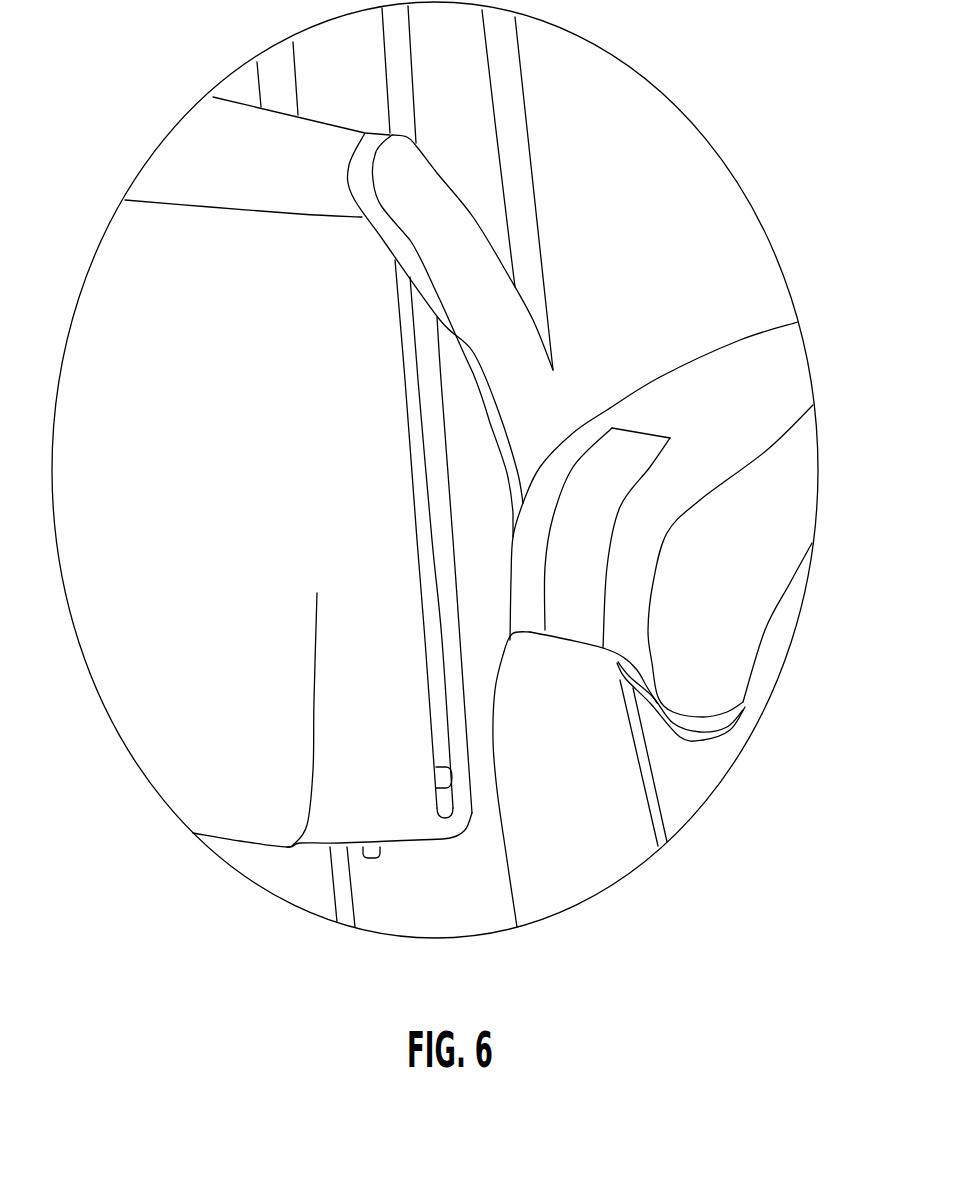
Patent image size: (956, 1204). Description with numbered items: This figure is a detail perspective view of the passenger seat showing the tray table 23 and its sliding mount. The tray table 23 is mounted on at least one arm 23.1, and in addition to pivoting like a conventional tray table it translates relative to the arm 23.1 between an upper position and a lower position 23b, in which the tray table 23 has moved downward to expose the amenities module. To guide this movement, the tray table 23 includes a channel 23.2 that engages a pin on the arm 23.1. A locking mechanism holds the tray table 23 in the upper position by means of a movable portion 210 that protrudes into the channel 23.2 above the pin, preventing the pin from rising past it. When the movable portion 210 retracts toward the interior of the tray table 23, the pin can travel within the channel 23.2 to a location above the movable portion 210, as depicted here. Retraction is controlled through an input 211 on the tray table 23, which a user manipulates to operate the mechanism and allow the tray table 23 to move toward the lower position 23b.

The tray table 23 is at (146, 474).
The arm 23.1 is at (442, 220).
The channel 23.2 is at (430, 647).
The lower position 23b is at (170, 737).
The movable portion 210 is at (447, 773).
The input 211 is at (375, 858).